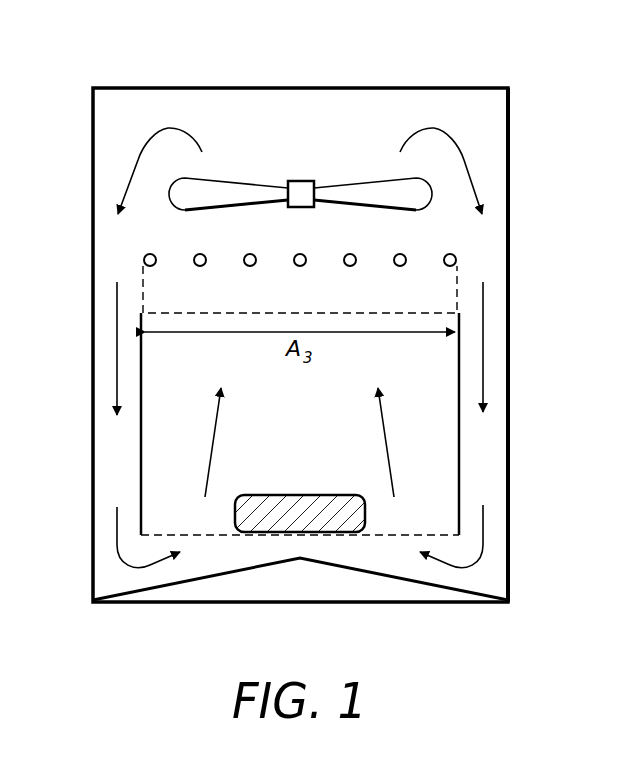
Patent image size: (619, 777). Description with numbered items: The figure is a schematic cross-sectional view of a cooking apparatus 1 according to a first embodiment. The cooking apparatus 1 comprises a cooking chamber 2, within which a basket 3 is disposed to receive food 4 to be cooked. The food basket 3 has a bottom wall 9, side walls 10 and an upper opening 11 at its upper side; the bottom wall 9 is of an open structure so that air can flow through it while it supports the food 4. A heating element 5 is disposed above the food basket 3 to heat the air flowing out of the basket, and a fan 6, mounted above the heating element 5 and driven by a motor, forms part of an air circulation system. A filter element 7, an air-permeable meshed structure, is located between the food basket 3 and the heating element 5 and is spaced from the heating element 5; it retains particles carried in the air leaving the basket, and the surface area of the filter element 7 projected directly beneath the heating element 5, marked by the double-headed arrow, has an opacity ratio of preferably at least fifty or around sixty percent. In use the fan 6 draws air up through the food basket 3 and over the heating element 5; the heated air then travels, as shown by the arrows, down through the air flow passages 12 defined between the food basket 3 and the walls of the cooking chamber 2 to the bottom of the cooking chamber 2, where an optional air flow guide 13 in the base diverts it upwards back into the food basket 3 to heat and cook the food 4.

The cooking apparatus 1 is at (76, 70).
The cooking chamber 2 is at (510, 163).
The basket 3 is at (460, 462).
The food 4 is at (253, 522).
The heating element 5 is at (458, 256).
The fan 6 is at (356, 190).
The filter element 7 is at (183, 310).
The bottom wall 9 is at (385, 537).
The side walls 10 is at (140, 461).
The upper opening 11 is at (445, 352).
The air flow passages 12 is at (107, 384).
The air flow guide 13 is at (302, 590).